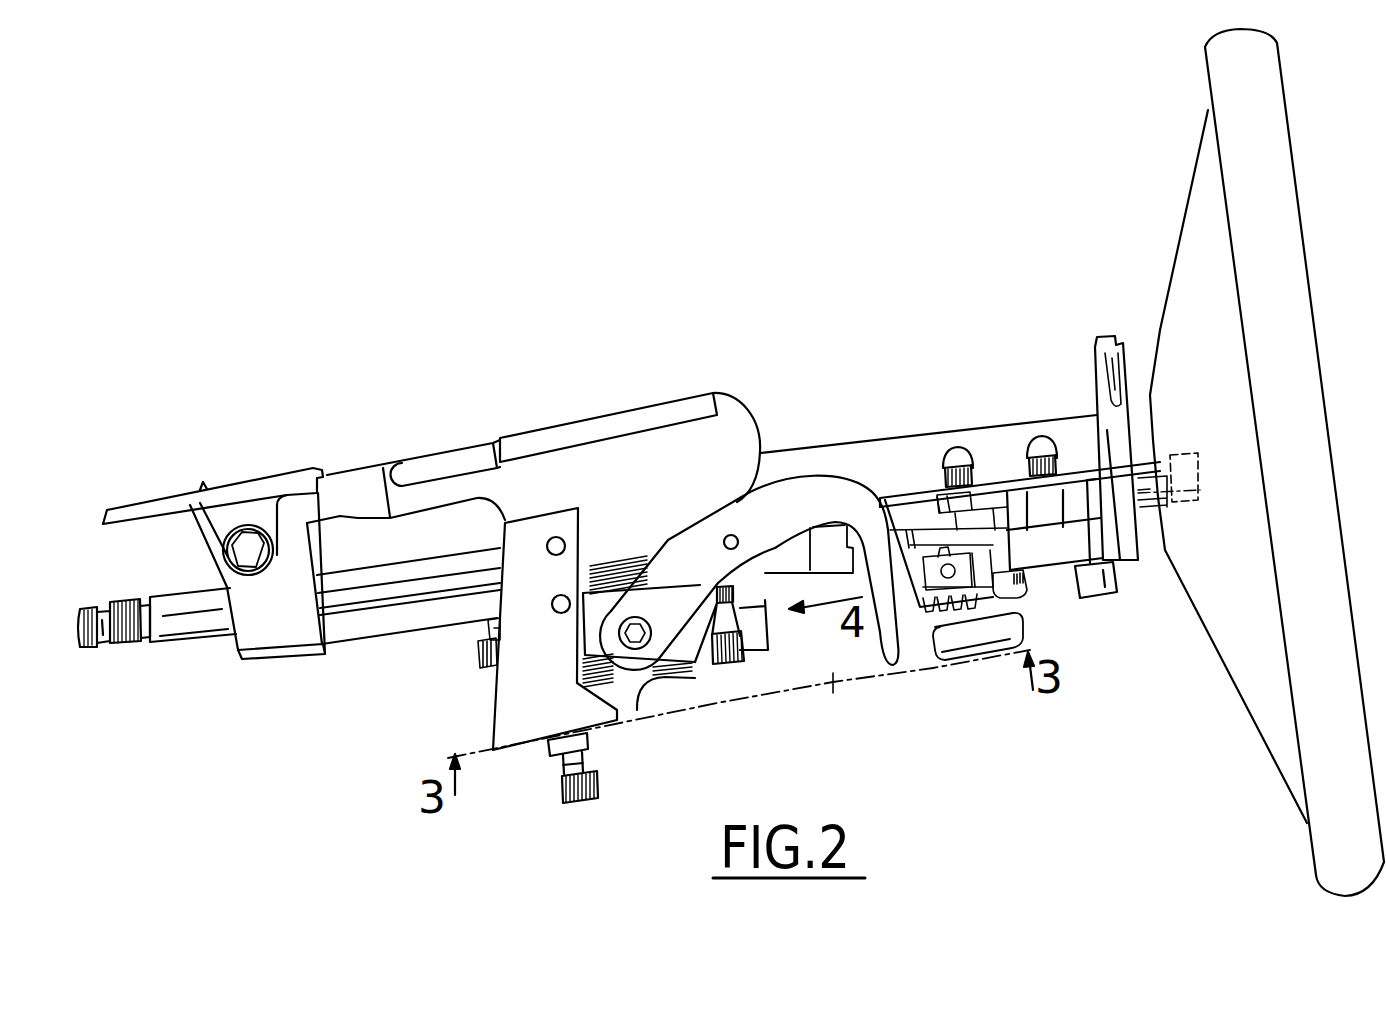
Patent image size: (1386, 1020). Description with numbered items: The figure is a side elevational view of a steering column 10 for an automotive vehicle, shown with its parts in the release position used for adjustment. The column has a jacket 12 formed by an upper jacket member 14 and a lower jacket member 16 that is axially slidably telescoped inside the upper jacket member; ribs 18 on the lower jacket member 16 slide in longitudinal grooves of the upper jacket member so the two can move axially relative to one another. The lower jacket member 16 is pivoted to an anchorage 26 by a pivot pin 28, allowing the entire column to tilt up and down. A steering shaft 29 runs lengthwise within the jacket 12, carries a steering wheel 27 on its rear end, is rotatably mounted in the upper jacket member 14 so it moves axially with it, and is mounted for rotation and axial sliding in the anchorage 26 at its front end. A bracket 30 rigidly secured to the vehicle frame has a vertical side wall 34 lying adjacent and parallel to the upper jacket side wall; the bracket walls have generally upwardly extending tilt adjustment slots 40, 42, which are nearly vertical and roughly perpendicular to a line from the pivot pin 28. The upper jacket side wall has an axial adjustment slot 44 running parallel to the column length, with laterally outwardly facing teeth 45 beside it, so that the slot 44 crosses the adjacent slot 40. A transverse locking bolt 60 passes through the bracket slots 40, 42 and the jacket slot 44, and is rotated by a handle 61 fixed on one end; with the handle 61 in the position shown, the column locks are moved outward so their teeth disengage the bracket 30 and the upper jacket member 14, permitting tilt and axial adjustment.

The steering column 10 is at (896, 280).
The jacket 12 is at (820, 440).
The upper jacket member 14 is at (975, 425).
The lower jacket member 16 is at (372, 635).
The ribs 18 is at (458, 594).
The anchorage 26 is at (290, 652).
The steering wheel 27 is at (1268, 157).
The pivot pin 28 is at (240, 540).
The steering shaft 29 is at (203, 628).
The bracket 30 is at (637, 440).
The bracket side wall 34 is at (562, 482).
The tilt adjustment slot 40 is at (657, 677).
The tilt adjustment slot 42 is at (672, 678).
The axial adjustment slot 44 is at (722, 632).
The teeth 45 is at (746, 665).
The locking bolt 60 is at (633, 623).
The handle 61 is at (906, 651).